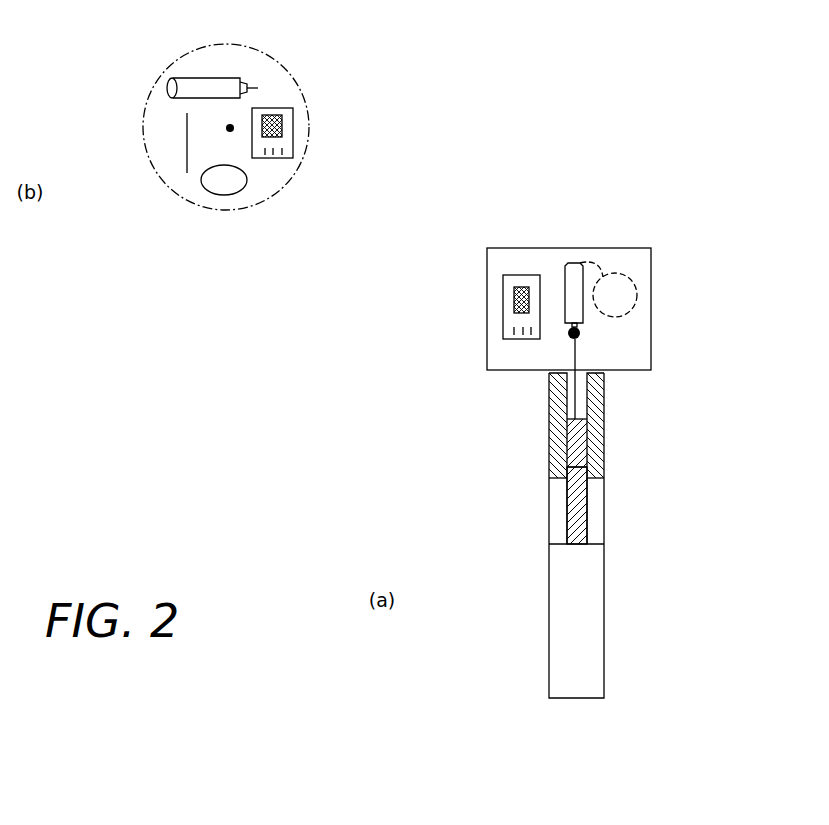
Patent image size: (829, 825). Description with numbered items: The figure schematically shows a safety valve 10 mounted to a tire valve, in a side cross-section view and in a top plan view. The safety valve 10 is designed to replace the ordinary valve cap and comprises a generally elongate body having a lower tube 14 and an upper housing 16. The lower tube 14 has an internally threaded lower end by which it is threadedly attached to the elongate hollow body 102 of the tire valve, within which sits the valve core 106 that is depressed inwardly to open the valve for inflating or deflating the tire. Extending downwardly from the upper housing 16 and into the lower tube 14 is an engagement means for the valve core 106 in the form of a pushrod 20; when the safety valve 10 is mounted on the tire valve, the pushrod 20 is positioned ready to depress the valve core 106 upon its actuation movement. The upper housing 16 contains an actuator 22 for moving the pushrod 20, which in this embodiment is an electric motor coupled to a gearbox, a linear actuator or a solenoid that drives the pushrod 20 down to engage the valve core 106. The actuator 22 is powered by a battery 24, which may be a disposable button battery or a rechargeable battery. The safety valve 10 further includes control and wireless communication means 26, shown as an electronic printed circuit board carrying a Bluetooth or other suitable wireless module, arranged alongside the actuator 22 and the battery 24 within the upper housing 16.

The safety valve 10 is at (365, 489).
The lower tube 14 is at (553, 435).
The upper housing 16 is at (487, 323).
The pushrod 20 is at (577, 362).
The actuator 22 is at (216, 83).
The battery 24 is at (224, 192).
The control and wireless communication means 26 is at (283, 137).
The body 102 is at (603, 670).
The valve core 106 is at (586, 525).